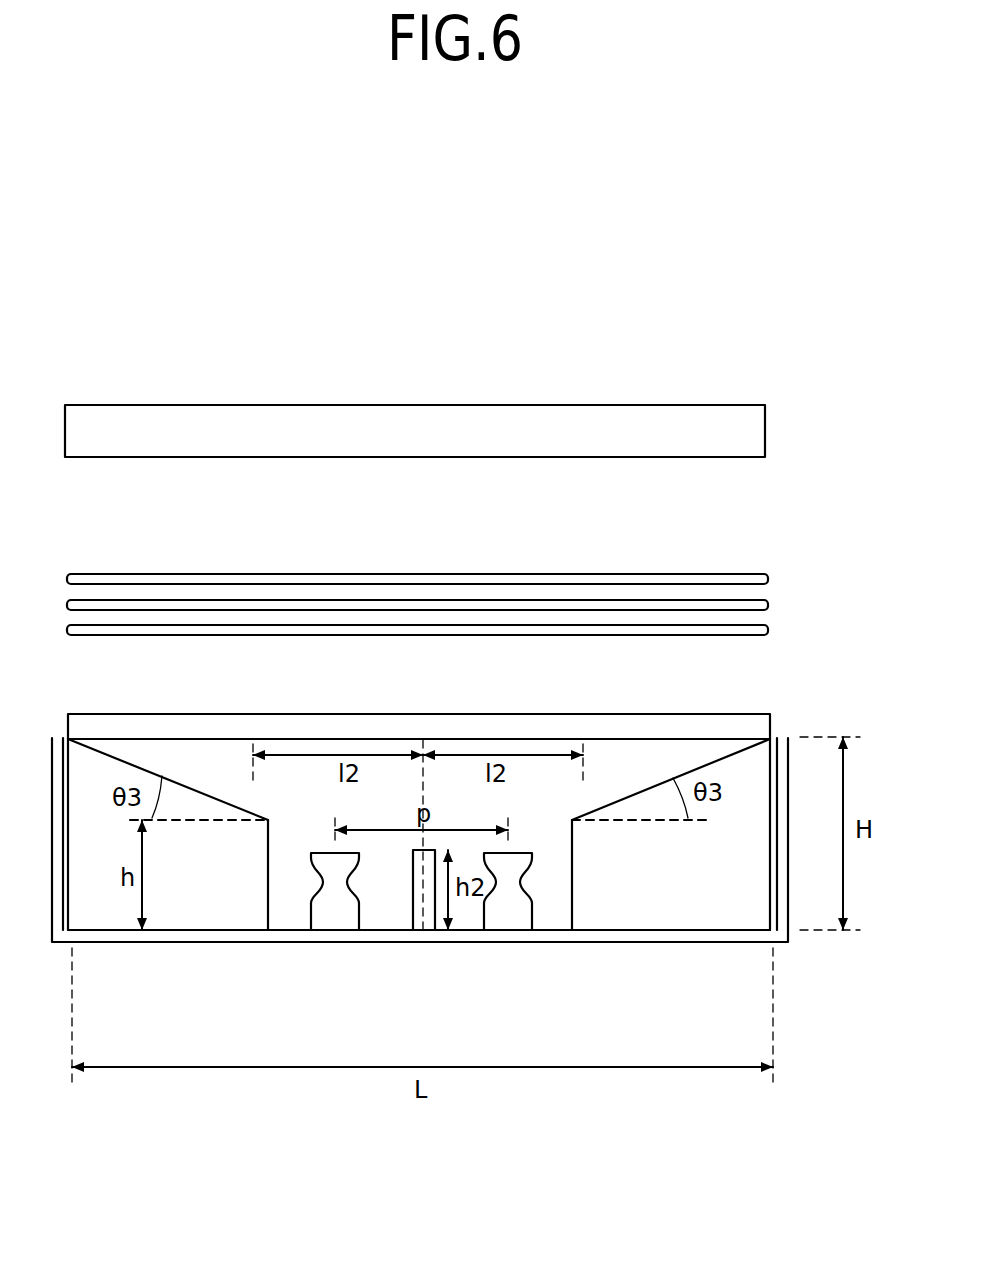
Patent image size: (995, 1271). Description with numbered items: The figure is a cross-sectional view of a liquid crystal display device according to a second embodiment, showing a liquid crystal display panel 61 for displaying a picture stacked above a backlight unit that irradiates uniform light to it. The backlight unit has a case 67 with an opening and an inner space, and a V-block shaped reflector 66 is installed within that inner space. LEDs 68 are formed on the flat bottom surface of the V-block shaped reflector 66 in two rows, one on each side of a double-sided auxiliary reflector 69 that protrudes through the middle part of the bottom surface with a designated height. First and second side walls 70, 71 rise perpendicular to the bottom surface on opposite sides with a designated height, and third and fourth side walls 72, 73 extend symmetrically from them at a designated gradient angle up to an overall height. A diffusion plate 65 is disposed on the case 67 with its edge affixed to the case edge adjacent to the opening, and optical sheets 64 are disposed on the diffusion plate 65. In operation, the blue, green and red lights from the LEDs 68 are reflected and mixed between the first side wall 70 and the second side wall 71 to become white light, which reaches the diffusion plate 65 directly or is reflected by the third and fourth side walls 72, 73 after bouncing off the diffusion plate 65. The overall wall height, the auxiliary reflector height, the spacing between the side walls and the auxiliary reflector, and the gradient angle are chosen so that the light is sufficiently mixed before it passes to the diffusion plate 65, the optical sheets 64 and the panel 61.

The liquid crystal display panel 61 is at (748, 414).
The optical sheets 64 is at (782, 565).
The diffusion plate 65 is at (758, 728).
The V-block shaped reflector 66 is at (706, 905).
The case 67 is at (790, 935).
The LEDs 68 is at (508, 900).
The double-sided auxiliary reflector 69 is at (413, 900).
The first side wall 70 is at (268, 880).
The second side wall 71 is at (560, 900).
The third side wall 72 is at (180, 778).
The fourth side wall 73 is at (638, 792).